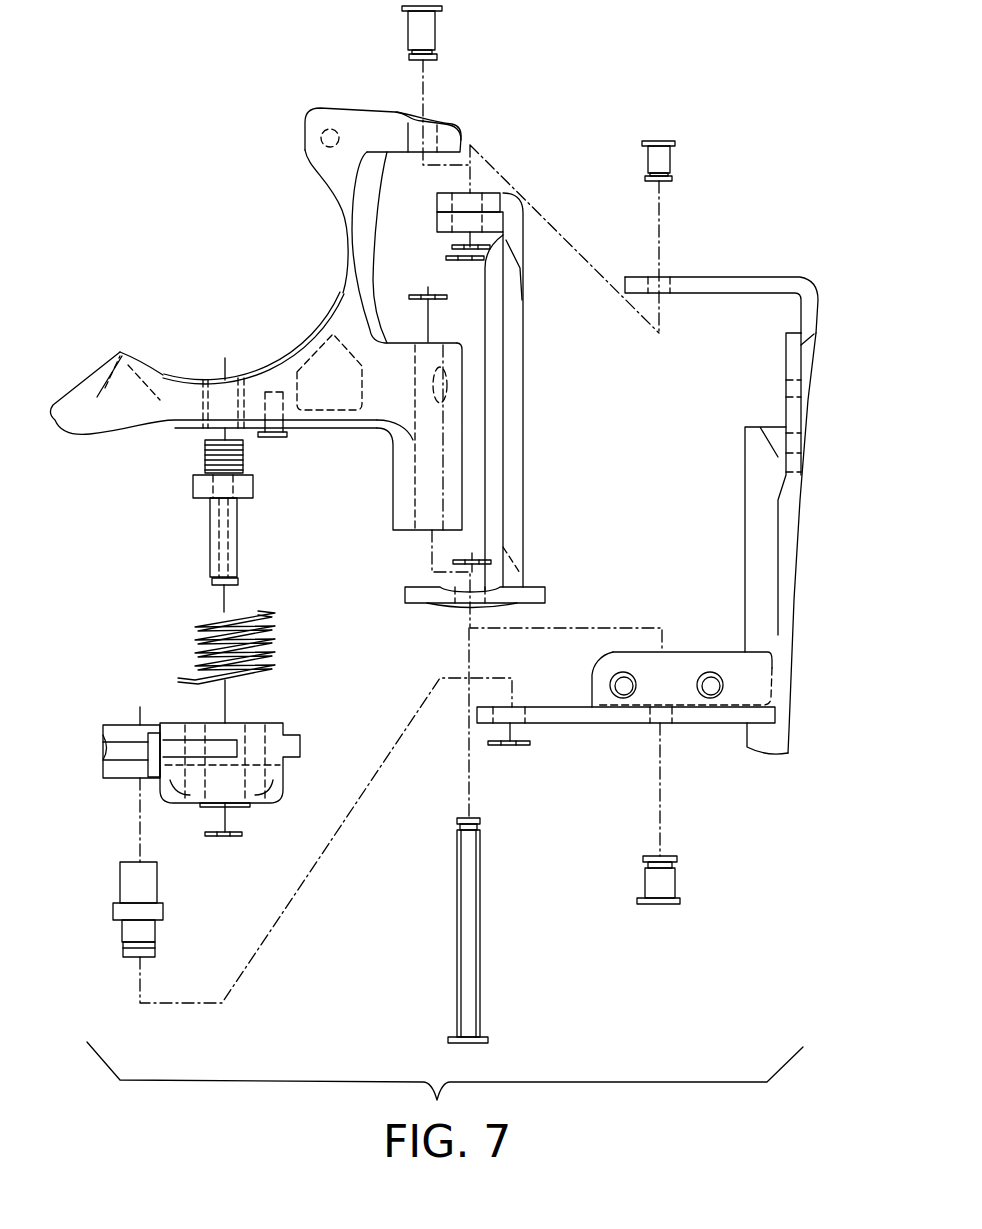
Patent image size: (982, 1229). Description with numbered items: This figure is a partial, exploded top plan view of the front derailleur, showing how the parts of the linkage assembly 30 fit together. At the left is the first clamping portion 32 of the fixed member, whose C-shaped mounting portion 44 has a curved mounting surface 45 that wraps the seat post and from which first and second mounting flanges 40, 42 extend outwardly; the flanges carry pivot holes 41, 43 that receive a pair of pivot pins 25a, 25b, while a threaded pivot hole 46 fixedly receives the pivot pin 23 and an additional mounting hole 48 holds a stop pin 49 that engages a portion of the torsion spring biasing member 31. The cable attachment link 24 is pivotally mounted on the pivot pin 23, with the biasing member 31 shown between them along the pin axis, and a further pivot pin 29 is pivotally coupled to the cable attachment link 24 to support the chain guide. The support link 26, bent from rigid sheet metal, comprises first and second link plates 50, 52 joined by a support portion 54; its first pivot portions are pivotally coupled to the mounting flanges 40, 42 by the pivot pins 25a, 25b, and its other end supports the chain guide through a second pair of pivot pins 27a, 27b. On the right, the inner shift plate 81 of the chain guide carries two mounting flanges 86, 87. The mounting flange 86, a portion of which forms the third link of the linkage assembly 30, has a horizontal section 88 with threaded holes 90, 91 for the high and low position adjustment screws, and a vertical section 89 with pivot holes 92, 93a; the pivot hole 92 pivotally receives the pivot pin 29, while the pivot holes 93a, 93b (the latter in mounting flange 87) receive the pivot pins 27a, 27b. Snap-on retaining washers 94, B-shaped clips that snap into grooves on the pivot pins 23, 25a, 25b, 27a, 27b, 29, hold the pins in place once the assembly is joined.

The pivot pin 23 is at (240, 512).
The cable attachment link 24 is at (293, 711).
The pivot pin 25a is at (480, 947).
The pivot pin 25b is at (437, 30).
The support link 26 is at (552, 391).
The pivot pin 27a is at (677, 885).
The pivot pin 27b is at (677, 153).
The pivot pin 29 is at (153, 885).
The linkage assembly 30 is at (527, 150).
The biasing member 31 is at (260, 640).
The first clamping portion 32 is at (364, 283).
The mounting flange 40 is at (412, 428).
The pivot hole 41 is at (458, 350).
The mounting flange 42 is at (447, 121).
The pivot hole 43 is at (417, 120).
The mounting portion 44 is at (213, 353).
The curved mounting surface 45 is at (320, 310).
The threaded pivot hole 46 is at (240, 397).
The mounting hole 48 is at (277, 378).
The stop pin 49 is at (273, 440).
The link plate 50 is at (547, 590).
The link plate 52 is at (437, 200).
The support portion 54 is at (518, 380).
The shift plate 81 is at (726, 454).
The mounting flange 86 is at (623, 686).
The mounting flange 87 is at (721, 284).
The horizontal section 88 is at (656, 632).
The vertical section 89 is at (623, 757).
The threaded hole 90 is at (617, 683).
The threaded hole 91 is at (723, 677).
The pivot hole 92 is at (493, 720).
The pivot hole 93a is at (670, 727).
The pivot hole 93b is at (667, 277).
The retaining washer 94 is at (423, 293).